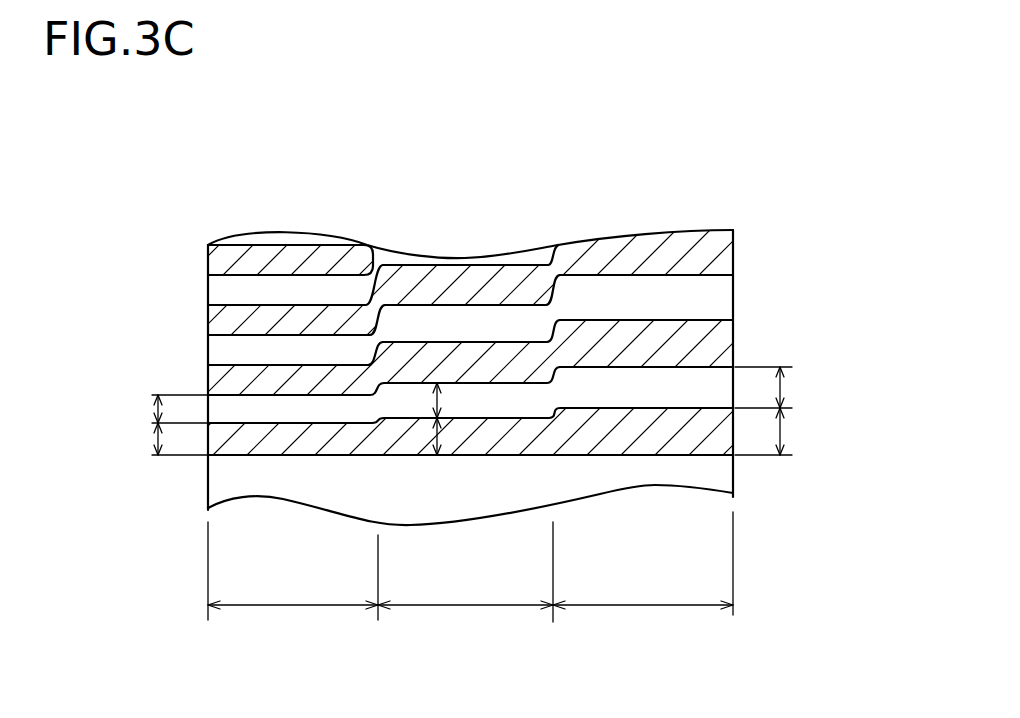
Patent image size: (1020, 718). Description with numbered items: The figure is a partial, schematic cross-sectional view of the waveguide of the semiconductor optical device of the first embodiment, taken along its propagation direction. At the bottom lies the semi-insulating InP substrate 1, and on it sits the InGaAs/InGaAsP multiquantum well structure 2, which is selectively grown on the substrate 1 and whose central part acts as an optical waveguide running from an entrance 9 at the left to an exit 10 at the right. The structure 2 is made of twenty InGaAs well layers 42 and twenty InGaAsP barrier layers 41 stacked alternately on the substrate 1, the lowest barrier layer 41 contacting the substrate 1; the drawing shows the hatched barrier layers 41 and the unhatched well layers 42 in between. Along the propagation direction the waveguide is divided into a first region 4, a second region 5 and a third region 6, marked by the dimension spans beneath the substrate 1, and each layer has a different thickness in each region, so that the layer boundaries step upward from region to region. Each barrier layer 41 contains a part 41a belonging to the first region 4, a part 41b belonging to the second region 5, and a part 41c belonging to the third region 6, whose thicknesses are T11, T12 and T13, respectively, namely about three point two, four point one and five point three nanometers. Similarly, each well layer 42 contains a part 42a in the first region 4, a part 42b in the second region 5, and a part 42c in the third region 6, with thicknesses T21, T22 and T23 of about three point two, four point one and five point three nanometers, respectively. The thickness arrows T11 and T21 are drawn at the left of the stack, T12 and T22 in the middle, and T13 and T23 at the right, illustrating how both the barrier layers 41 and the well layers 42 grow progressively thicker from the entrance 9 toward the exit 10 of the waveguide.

The semi-insulating InP substrate 1 is at (718, 478).
The multiquantum well structure 2 is at (867, 455).
The first region 4 is at (285, 649).
The second region 5 is at (455, 649).
The third region 6 is at (633, 648).
The entrance 9 is at (208, 252).
The exit 10 is at (735, 258).
The InGaAsP barrier layers 41 is at (736, 330).
The part of barrier layer belonging to the first region 41a is at (208, 312).
The part of barrier layer belonging to the second region 41b is at (512, 282).
The part of barrier layer belonging to the third region 41c is at (720, 357).
The InGaAs well layers 42 is at (196, 352).
The part of well layer belonging to the first region 42a is at (218, 292).
The part of well layer belonging to the second region 42b is at (403, 315).
The part of well layer belonging to the third region 42c is at (720, 295).
The thickness of barrier layer part in first region T11 is at (155, 440).
The thickness of barrier layer part in second region T12 is at (441, 437).
The thickness of barrier layer part in third region T13 is at (788, 434).
The thickness of well layer part in first region T21 is at (157, 411).
The thickness of well layer part in second region T22 is at (439, 388).
The thickness of well layer part in third region T23 is at (788, 388).